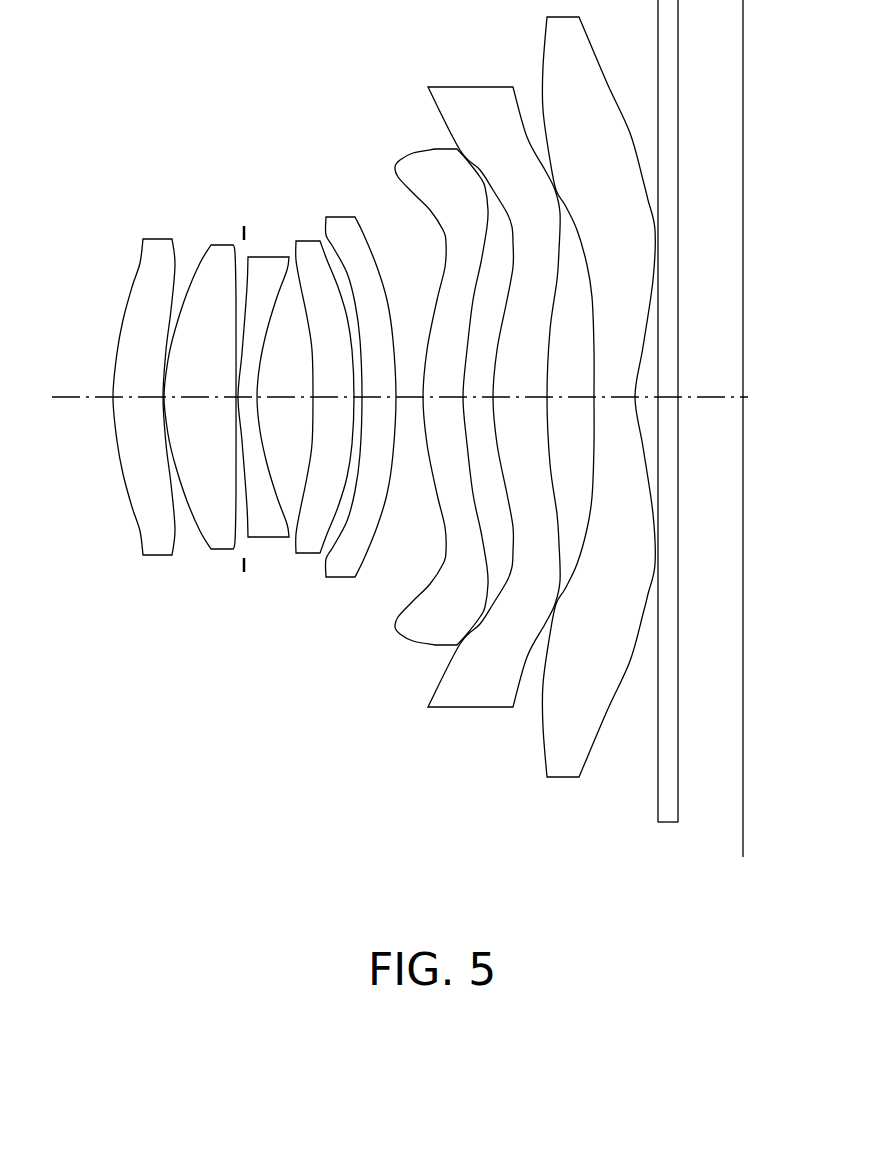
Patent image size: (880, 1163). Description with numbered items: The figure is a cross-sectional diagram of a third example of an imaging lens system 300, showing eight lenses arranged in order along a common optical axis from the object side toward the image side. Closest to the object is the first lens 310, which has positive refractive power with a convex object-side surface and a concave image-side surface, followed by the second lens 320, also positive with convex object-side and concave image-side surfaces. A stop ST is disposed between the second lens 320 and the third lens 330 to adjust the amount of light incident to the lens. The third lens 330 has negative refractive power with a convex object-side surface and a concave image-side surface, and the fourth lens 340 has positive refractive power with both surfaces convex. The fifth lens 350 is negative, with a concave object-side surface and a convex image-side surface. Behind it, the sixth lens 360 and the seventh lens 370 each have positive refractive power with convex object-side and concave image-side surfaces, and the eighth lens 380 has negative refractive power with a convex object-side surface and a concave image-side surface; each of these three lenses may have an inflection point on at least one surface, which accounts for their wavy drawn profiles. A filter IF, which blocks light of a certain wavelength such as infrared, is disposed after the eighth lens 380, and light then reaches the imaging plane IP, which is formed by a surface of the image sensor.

The imaging lens system 300 is at (323, 90).
The first lens 310 is at (158, 557).
The second lens 320 is at (223, 553).
The third lens 330 is at (267, 538).
The fourth lens 340 is at (305, 555).
The fifth lens 350 is at (340, 578).
The sixth lens 360 is at (421, 648).
The seventh lens 370 is at (470, 707).
The eighth lens 380 is at (563, 777).
The stop ST is at (247, 230).
The filter IF is at (670, 823).
The imaging plane IP is at (743, 828).